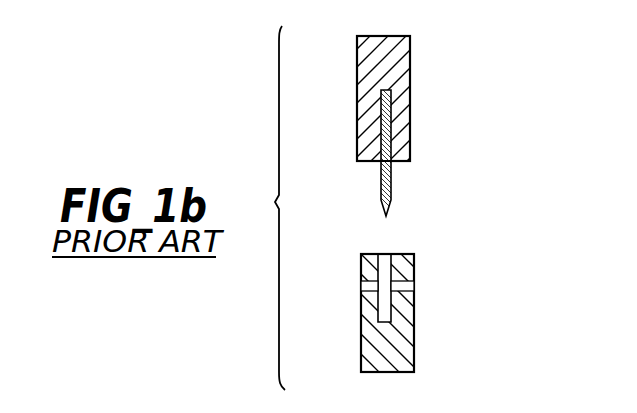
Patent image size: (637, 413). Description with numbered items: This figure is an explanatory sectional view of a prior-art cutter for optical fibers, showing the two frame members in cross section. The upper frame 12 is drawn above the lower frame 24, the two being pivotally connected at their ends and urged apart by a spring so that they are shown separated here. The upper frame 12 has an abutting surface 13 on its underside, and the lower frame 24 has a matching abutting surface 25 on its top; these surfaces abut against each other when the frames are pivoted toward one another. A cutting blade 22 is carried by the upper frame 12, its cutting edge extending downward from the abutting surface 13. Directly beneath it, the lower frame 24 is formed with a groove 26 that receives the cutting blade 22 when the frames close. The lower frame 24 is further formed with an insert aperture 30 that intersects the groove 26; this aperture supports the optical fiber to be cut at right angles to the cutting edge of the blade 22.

The upper frame 12 is at (358, 62).
The abutting surface 13 is at (372, 163).
The cutting blade 22 is at (391, 187).
The lower frame 24 is at (408, 348).
The abutting surface 25 is at (370, 253).
The groove 26 is at (385, 312).
The insert aperture 30 is at (362, 287).